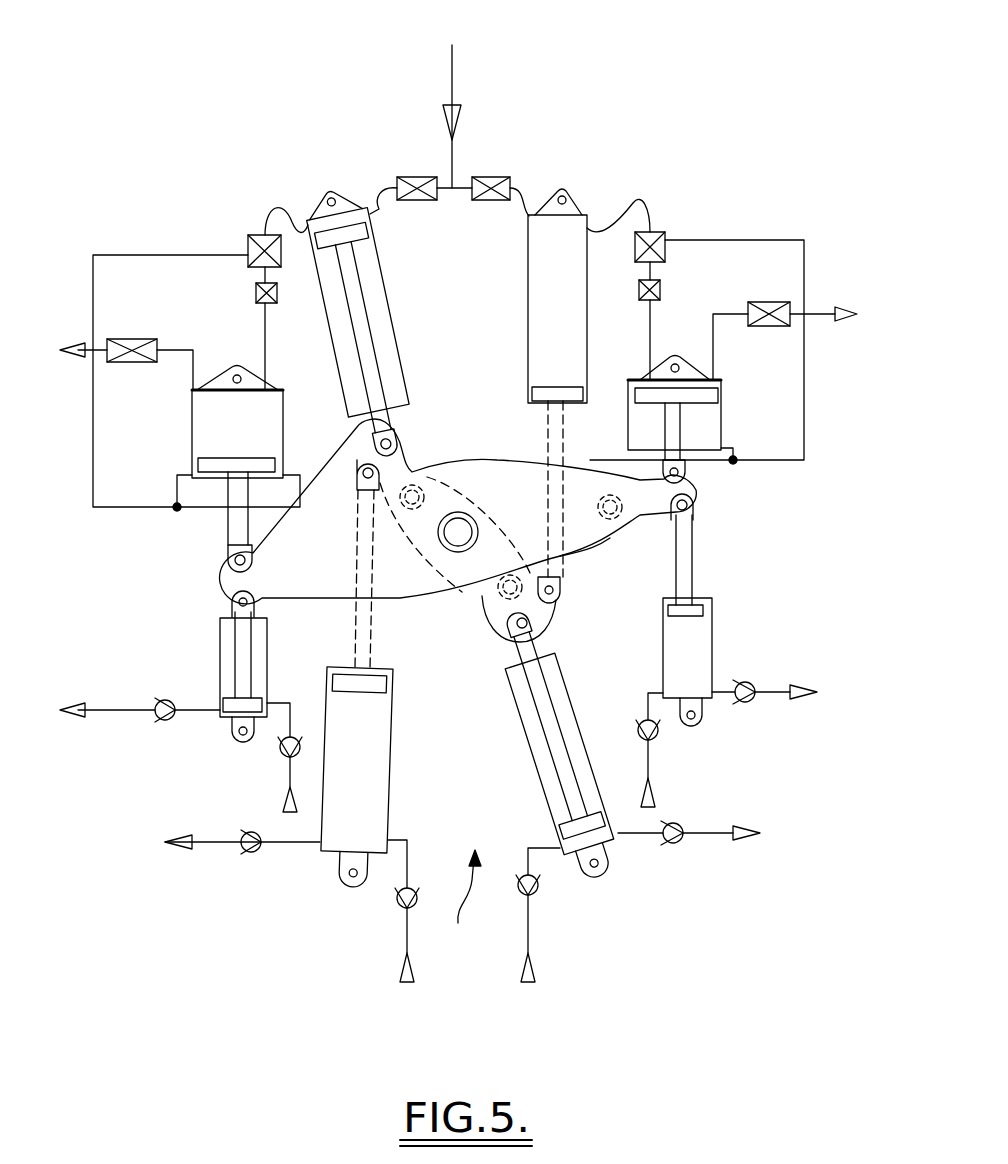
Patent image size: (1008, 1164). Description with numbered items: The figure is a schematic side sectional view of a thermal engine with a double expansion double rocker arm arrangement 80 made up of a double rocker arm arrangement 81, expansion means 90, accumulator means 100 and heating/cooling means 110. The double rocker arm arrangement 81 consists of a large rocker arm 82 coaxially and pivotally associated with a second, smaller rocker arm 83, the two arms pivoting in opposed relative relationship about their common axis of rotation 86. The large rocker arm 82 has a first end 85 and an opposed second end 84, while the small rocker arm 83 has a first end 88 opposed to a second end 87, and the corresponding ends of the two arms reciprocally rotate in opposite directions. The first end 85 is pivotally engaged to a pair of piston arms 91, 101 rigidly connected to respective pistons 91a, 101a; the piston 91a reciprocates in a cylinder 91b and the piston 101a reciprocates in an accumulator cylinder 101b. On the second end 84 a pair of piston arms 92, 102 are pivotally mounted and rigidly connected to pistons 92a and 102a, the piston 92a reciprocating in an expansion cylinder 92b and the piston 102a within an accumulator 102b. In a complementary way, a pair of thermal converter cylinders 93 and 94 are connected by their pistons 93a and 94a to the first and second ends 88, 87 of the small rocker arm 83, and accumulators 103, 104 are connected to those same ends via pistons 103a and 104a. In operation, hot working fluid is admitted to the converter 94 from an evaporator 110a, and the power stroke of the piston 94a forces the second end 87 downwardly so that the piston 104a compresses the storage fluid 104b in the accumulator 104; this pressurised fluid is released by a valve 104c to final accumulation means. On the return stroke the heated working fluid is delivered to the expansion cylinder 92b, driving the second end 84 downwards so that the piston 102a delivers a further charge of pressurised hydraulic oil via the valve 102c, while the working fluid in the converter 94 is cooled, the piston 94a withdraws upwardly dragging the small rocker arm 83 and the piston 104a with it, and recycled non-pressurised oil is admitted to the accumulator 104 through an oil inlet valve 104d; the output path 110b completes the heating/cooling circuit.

The double expansion double rocker arm arrangement 80 is at (265, 160).
The double rocker arm arrangement 81 is at (473, 552).
The large rocker arm 82 is at (590, 550).
The small rocker arm 83 is at (490, 606).
The second end of large rocker arm 84 is at (698, 492).
The first end of large rocker arm 85 is at (225, 580).
The common axis of rotation 86 is at (455, 545).
The second end of small rocker arm 87 is at (512, 638).
The first end of small rocker arm 88 is at (400, 465).
The expansion means 90 is at (585, 175).
The piston arm 91 is at (193, 469).
The piston 91a is at (213, 465).
The cylinder 91b is at (198, 413).
The piston arm 92 is at (710, 418).
The piston 92a is at (718, 395).
The expansion cylinder 92b is at (673, 422).
The thermal converter cylinder 93 is at (376, 323).
The piston 93a is at (372, 230).
The thermal converter cylinder 94 is at (527, 396).
The piston 94a is at (548, 388).
The accumulator means 100 is at (466, 901).
The piston arm 101 is at (181, 701).
The piston 101a is at (240, 652).
The accumulator cylinder 101b is at (220, 626).
The piston arm 102 is at (730, 650).
The piston 102a is at (705, 615).
The accumulator 102b is at (712, 660).
The valve 102c is at (740, 703).
The accumulator 103 is at (318, 721).
The piston 103a is at (383, 688).
The accumulator 104 is at (628, 793).
The piston 104a is at (582, 826).
The storage fluid 104b is at (594, 862).
The valve 104c is at (680, 843).
The oil inlet valve 104d is at (543, 882).
The heating/cooling means 110 is at (636, 101).
The evaporator 110a is at (456, 100).
The return line 110b is at (826, 276).